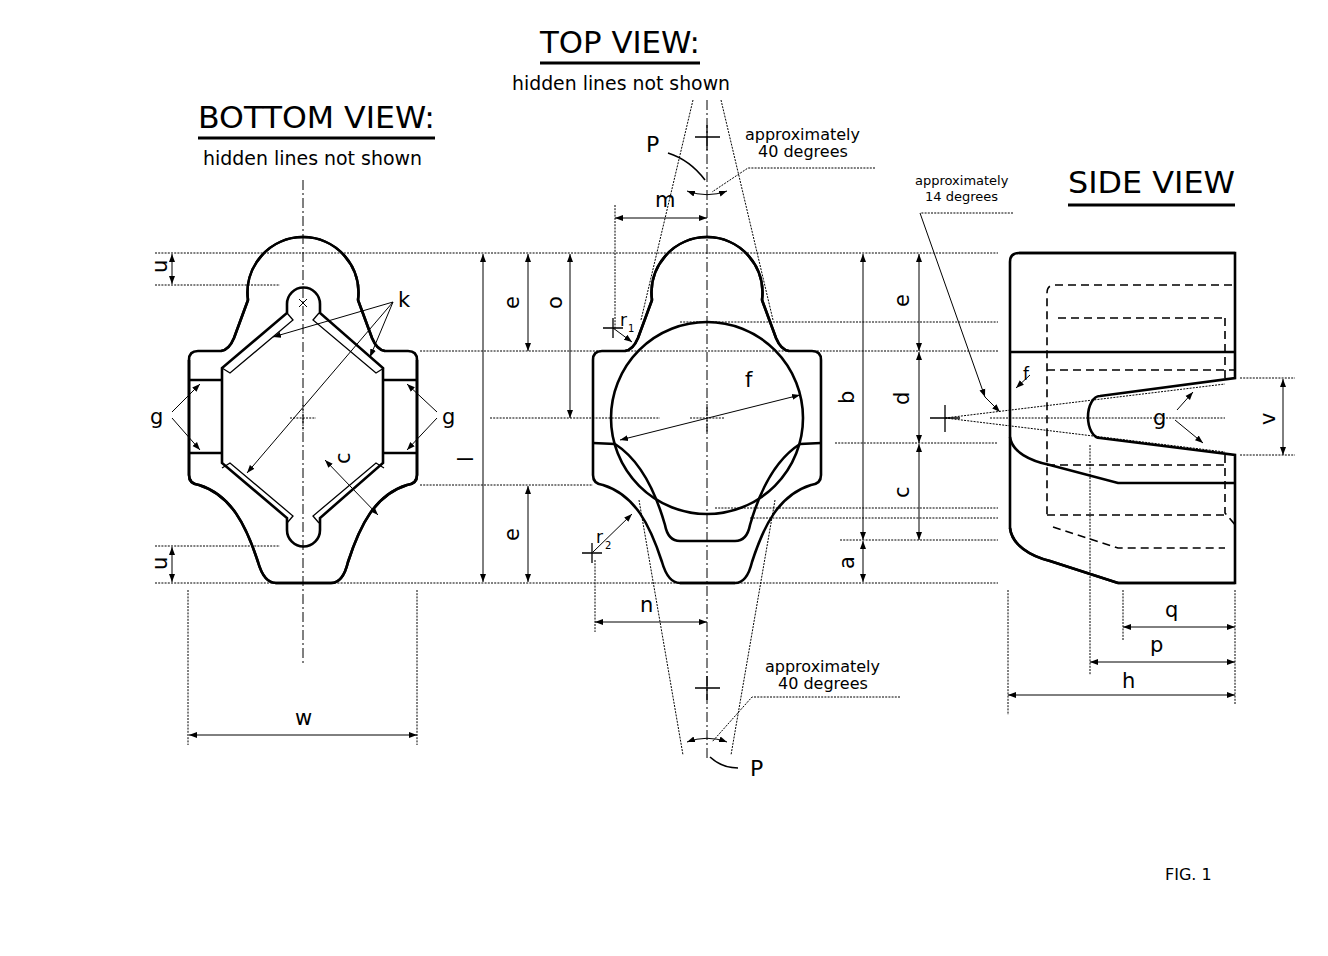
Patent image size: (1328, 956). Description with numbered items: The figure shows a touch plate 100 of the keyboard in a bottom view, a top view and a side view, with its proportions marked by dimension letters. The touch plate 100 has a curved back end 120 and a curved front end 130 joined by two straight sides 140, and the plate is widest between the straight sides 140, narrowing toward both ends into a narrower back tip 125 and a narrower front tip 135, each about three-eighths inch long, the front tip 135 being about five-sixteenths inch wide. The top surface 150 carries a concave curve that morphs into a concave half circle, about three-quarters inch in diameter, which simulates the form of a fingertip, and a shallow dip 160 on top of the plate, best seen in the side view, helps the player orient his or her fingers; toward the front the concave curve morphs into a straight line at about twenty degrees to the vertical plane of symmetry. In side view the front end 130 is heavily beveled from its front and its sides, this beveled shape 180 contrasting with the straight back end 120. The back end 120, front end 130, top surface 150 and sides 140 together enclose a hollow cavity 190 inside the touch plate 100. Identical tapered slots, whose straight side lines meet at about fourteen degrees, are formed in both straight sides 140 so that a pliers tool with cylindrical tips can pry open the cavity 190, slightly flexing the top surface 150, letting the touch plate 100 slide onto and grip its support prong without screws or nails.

The touch plate 100 is at (190, 210).
The back end 120 is at (316, 252).
The back tip 125 is at (336, 284).
The front end 130 is at (280, 590).
The front tip 135 is at (330, 574).
The sides 140 is at (186, 373).
The top surface 150 is at (752, 357).
The shallow dip 160 is at (1012, 448).
The beveled shape 180 is at (1062, 565).
The hollow cavity 190 is at (1218, 300).